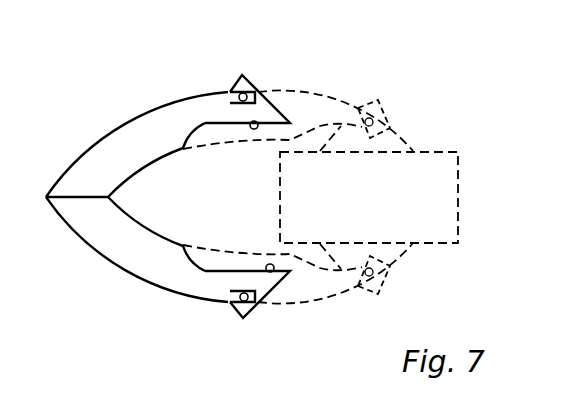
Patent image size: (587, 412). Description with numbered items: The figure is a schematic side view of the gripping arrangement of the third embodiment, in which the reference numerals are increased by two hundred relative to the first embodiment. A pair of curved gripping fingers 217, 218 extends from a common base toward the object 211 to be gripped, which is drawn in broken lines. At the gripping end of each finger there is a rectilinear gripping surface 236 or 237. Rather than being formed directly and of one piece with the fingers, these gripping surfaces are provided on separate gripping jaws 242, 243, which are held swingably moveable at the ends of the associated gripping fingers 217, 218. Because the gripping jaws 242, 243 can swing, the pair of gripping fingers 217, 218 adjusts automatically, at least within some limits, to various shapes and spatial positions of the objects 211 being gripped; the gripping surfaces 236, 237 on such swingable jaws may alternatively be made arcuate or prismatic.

The object to be gripped 211 is at (458, 207).
The gripping finger 217 is at (162, 123).
The gripping finger 218 is at (140, 265).
The rectilinear gripping surface 236 is at (259, 105).
The rectilinear gripping surface 237 is at (280, 274).
The gripping jaw 242 is at (257, 121).
The gripping jaw 243 is at (263, 283).